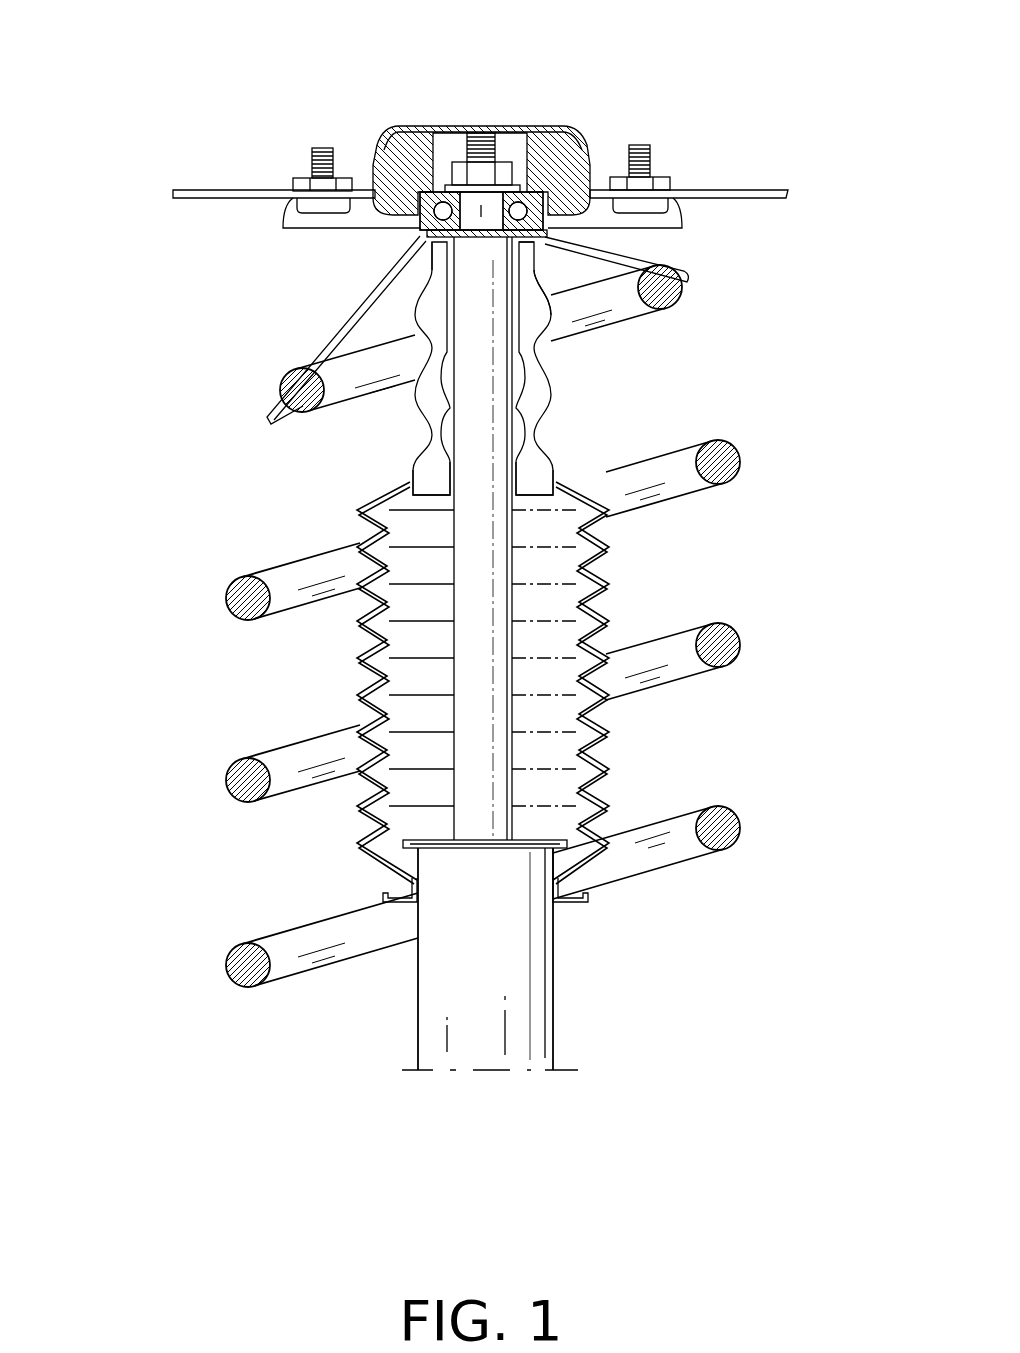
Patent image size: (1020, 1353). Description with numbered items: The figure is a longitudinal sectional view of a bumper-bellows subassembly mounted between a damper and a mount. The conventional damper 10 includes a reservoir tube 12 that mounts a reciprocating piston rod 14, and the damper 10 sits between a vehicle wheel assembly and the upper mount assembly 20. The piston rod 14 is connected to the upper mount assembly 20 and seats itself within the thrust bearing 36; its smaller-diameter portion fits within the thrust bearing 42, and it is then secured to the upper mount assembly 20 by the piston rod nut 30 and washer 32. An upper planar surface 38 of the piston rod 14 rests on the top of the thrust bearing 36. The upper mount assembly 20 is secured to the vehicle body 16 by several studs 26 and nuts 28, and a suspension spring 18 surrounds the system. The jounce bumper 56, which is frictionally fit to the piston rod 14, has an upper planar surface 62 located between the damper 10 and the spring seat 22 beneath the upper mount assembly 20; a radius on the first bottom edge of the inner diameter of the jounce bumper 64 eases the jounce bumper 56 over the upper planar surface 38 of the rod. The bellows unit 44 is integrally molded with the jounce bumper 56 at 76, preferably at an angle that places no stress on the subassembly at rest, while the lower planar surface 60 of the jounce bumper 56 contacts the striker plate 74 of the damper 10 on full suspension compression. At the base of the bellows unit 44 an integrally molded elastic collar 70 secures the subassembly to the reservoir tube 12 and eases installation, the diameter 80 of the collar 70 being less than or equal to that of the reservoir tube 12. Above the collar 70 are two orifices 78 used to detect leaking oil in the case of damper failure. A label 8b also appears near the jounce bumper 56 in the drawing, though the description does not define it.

The damper 10 is at (475, 1110).
The reservoir tube 12 is at (528, 1024).
The piston rod 14 is at (495, 754).
The vehicle body 16 is at (765, 189).
The suspension spring 18 is at (676, 832).
The upper mount assembly 20 is at (683, 209).
The spring seat 22 is at (360, 300).
The studs 26 is at (323, 147).
The nuts 28 is at (296, 179).
The piston rod nut 30 is at (503, 130).
The washer 32 is at (517, 208).
The thrust bearing 36 is at (645, 242).
The upper planar surface 38 is at (497, 240).
The thrust bearing 42 is at (470, 210).
The bellows unit 44 is at (605, 541).
The jounce bumper 56 is at (414, 448).
The lower planar surface 60 is at (538, 532).
The upper planar surface 62 is at (440, 244).
The inner diameter of the jounce bumper 64 is at (548, 318).
The bumper section 8b is at (518, 252).
The elastic collar 70 is at (410, 890).
The striker plate 74 is at (449, 839).
The molded junction 76 is at (555, 490).
The orifices 78 is at (603, 887).
The diameter of the collar 80 is at (555, 905).